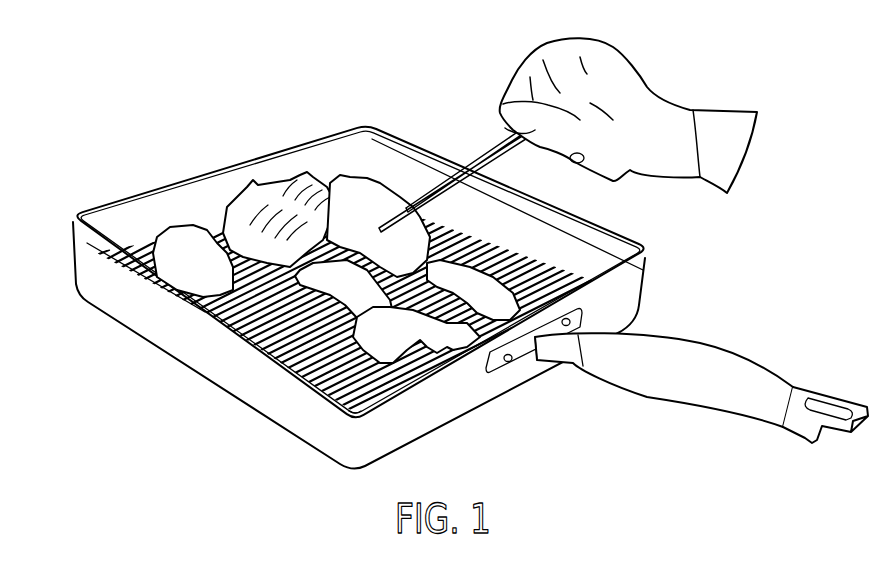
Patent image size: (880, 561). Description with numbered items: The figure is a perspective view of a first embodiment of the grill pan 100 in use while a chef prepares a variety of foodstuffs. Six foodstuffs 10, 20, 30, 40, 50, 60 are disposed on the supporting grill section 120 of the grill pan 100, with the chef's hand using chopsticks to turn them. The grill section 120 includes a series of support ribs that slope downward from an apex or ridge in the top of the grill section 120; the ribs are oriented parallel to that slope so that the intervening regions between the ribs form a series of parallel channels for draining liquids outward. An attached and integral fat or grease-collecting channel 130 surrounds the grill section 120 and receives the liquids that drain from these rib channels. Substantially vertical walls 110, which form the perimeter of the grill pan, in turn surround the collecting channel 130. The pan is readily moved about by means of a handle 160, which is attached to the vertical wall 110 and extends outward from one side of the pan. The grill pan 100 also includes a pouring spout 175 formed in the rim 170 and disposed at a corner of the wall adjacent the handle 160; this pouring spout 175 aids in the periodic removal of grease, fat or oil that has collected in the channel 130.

The grill pan 100 is at (443, 245).
The vertical walls 110 is at (72, 268).
The grill section 120 is at (518, 238).
The grease-collecting channel 130 is at (567, 268).
The handle 160 is at (722, 343).
The rim 170 is at (332, 128).
The pouring spout 175 is at (377, 410).
The foodstuff 10 is at (183, 271).
The foodstuff 20 is at (298, 253).
The foodstuff 30 is at (351, 226).
The foodstuff 40 is at (333, 299).
The foodstuff 50 is at (381, 341).
The foodstuff 60 is at (468, 296).